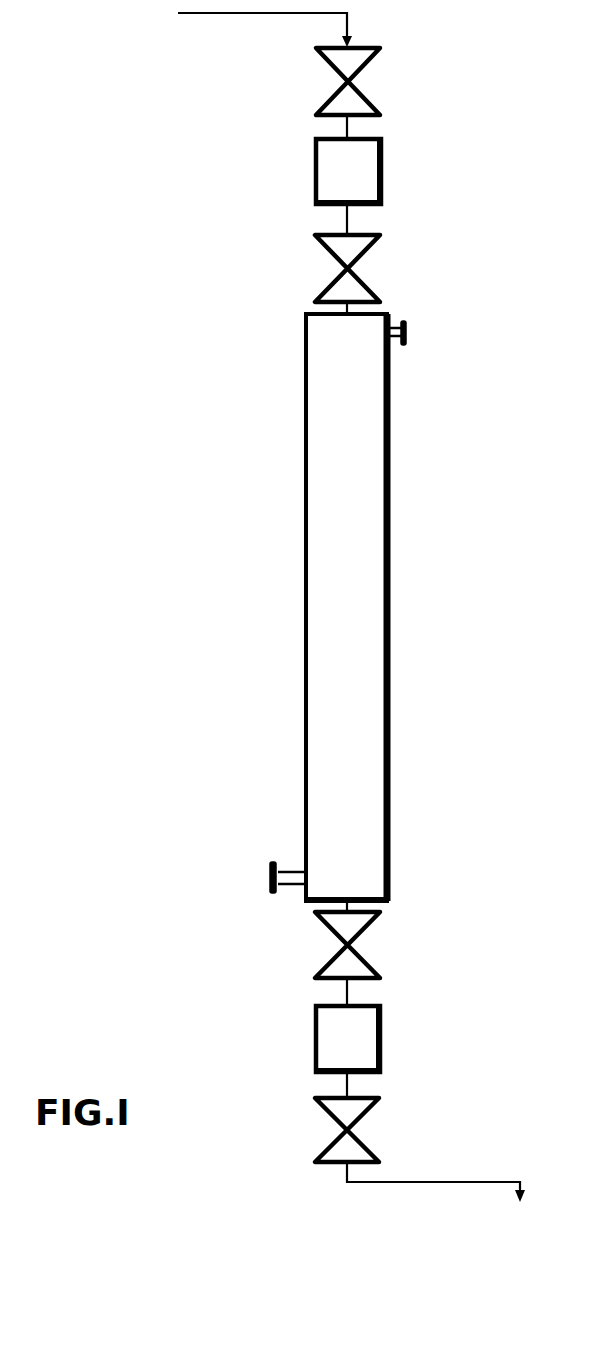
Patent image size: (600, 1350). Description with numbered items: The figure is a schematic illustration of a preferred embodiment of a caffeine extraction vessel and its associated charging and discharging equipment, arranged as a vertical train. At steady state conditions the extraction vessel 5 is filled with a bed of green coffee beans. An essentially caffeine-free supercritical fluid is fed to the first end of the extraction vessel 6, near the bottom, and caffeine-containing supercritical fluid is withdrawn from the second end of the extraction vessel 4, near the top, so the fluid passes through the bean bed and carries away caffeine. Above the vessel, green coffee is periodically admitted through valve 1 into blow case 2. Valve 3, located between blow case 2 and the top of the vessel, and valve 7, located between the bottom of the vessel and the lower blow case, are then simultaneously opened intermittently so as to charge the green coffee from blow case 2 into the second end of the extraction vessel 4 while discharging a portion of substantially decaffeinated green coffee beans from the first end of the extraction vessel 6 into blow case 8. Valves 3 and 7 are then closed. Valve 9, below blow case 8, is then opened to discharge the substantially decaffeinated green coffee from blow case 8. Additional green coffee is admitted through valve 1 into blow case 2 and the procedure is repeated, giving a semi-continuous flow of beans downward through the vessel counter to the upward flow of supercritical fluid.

The valve 1 is at (363, 81).
The blow case 2 is at (382, 178).
The valve 3 is at (360, 270).
The second end of the extraction vessel 4 is at (408, 332).
The extraction vessel 5 is at (388, 574).
The first end of the extraction vessel 6 is at (268, 878).
The valve 7 is at (362, 946).
The blow case 8 is at (381, 1048).
The valve 9 is at (364, 1130).